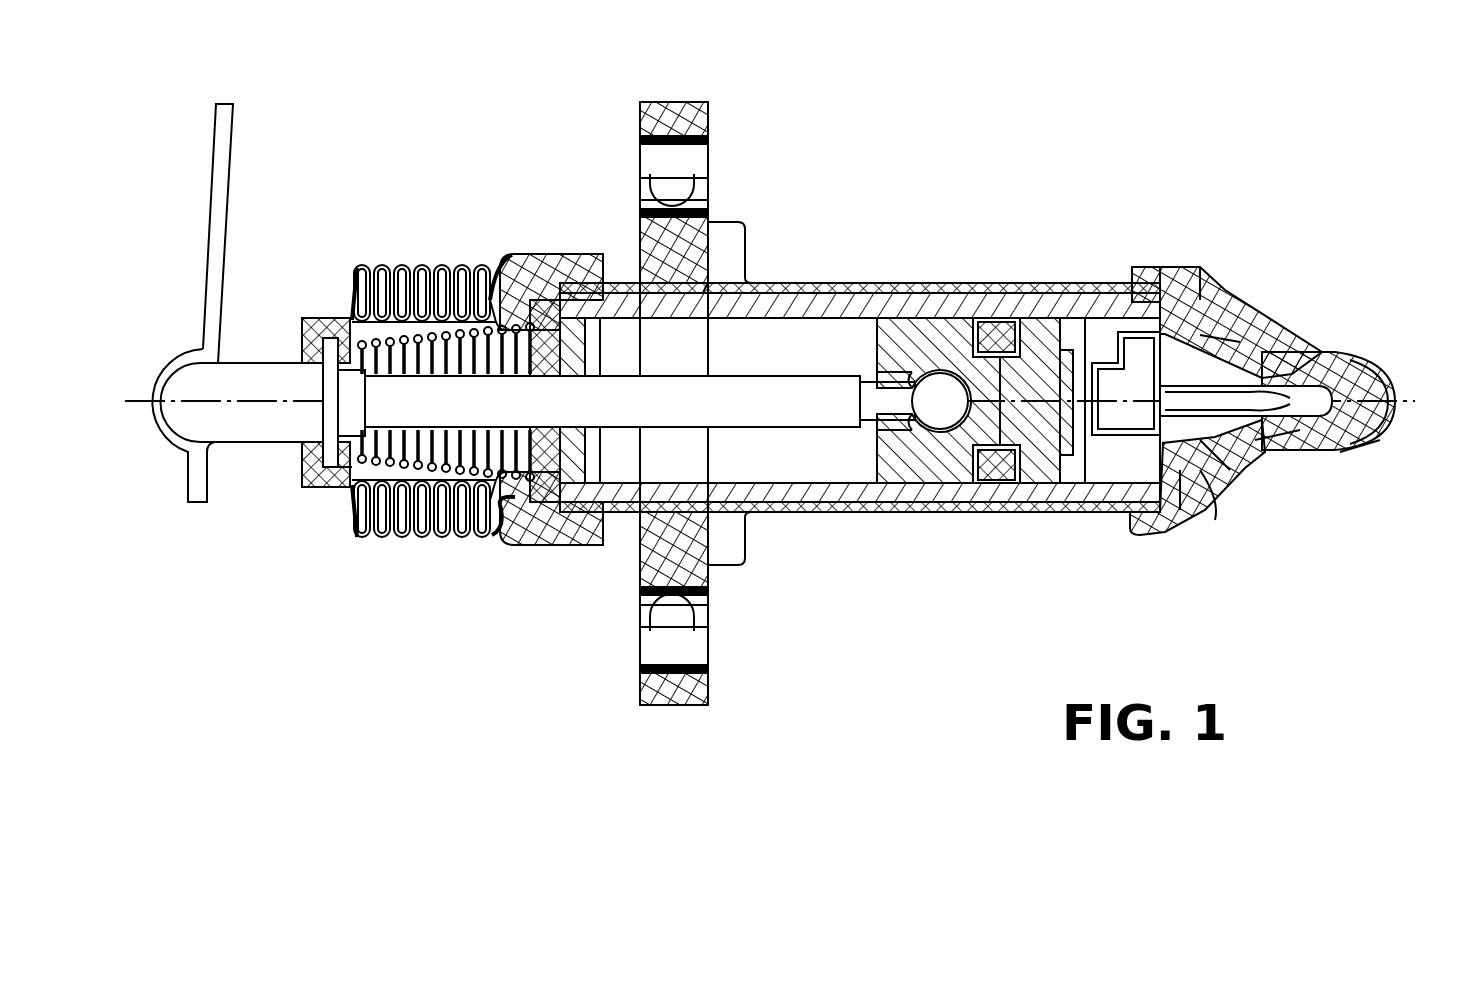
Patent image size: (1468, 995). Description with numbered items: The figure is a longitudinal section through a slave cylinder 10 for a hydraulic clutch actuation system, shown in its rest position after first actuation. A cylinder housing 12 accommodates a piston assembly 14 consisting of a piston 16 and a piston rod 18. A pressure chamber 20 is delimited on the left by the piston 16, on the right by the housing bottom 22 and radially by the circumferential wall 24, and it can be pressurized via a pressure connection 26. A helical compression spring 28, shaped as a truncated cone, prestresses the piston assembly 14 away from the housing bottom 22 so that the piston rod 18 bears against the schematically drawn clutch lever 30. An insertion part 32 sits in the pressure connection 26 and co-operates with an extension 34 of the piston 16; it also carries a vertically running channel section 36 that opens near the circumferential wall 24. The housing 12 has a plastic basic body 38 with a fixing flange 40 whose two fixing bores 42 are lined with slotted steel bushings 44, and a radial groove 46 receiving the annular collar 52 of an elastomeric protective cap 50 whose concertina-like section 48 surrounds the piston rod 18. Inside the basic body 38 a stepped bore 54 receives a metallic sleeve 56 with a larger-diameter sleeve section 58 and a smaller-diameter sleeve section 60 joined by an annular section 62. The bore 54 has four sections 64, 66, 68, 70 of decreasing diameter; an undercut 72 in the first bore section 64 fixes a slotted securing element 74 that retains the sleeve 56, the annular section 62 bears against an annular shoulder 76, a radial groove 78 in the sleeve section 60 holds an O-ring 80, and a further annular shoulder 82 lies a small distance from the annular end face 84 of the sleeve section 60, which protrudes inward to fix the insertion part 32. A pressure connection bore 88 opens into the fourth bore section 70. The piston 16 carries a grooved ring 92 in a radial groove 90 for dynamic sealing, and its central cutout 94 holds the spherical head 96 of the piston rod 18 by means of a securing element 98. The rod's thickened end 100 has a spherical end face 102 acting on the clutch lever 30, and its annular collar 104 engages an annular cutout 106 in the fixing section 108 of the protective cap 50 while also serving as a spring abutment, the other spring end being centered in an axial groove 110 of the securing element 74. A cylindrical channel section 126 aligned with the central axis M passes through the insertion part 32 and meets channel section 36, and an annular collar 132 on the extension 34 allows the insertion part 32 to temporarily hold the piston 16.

The slave cylinder 10 is at (1124, 262).
The cylinder housing 12 is at (804, 286).
The piston assembly 14 is at (860, 440).
The piston 16 is at (896, 474).
The piston rod 18 is at (671, 432).
The pressure chamber 20 is at (1099, 454).
The housing bottom 22 is at (1158, 532).
The circumferential wall 24 is at (740, 483).
The pressure connection 26 is at (1314, 348).
The helical compression spring 28 is at (363, 270).
The clutch lever 30 is at (206, 335).
The insertion part 32 is at (1049, 485).
The extension 34 is at (1114, 340).
The channel section 36 is at (1174, 316).
The basic body 38 is at (640, 540).
The fixing flange 40 is at (640, 692).
The fixing bores 42 is at (706, 154).
The slotted steel bushings 44 is at (698, 166).
The radial groove 46 is at (564, 562).
The concertina-like section 48 is at (399, 338).
The protective cap 50 is at (441, 268).
The annular collar 52 is at (584, 280).
The stepped bore 54 is at (862, 296).
The sleeve 56 is at (860, 400).
The larger-diameter sleeve section 58 is at (764, 288).
The smaller-diameter sleeve section 60 is at (1234, 340).
The annular section 62 is at (1204, 302).
The first bore section 64 is at (530, 278).
The second bore section 66 is at (674, 318).
The third bore section 68 is at (1258, 386).
The fourth bore section 70 is at (1348, 374).
The undercut 72 is at (514, 527).
The securing element 74 is at (592, 318).
The annular shoulder 76 is at (1198, 532).
The radial groove 78 is at (1226, 514).
The O-ring 80 is at (1234, 474).
The annular shoulder 82 is at (1264, 450).
The annular end face 84 is at (1250, 374).
The pressure connection bore 88 is at (1364, 456).
The radial groove 90 is at (982, 485).
The grooved ring 92 is at (994, 318).
The central cutout 94 is at (947, 340).
The spherical head 96 is at (929, 383).
The securing element 98 is at (906, 474).
The thickened end 100 is at (241, 444).
The spherical end face 102 is at (162, 440).
The annular collar 104 is at (320, 470).
The annular cutout 106 is at (323, 372).
The fixing section 108 is at (304, 342).
The axial groove 110 is at (498, 300).
The channel section 126 is at (1332, 400).
The annular collar 132 is at (1080, 350).
The central axis M is at (150, 396).